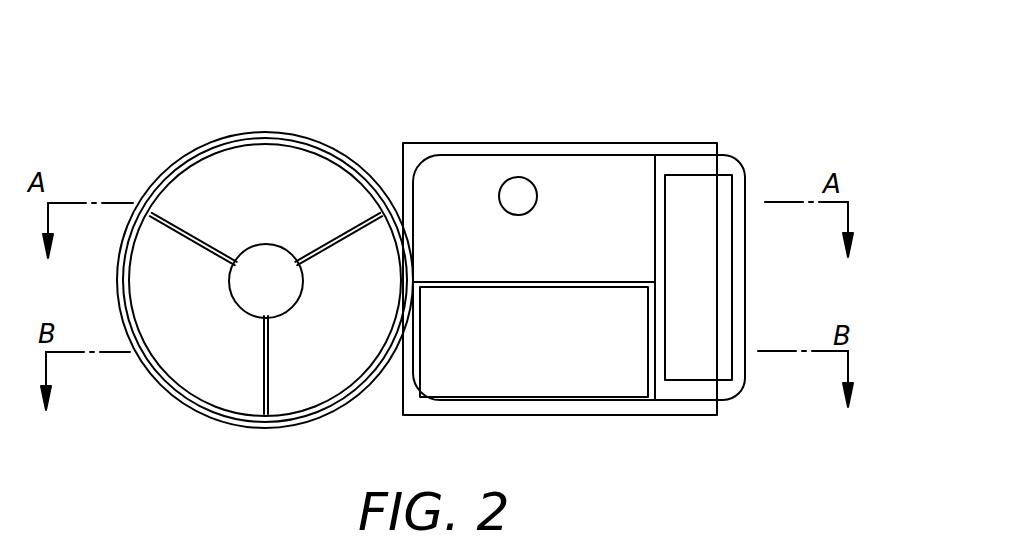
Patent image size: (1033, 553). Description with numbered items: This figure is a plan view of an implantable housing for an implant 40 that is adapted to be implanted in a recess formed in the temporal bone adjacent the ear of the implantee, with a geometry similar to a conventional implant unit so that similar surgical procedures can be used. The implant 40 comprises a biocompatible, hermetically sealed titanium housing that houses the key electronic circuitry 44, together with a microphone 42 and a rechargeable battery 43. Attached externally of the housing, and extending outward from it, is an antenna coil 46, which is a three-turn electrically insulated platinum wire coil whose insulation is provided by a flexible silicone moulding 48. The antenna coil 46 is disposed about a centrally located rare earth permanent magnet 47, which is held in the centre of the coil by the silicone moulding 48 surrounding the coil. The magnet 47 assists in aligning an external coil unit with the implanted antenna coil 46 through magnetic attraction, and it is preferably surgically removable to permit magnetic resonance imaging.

The implant 40 is at (609, 240).
The microphone 42 is at (518, 187).
The rechargeable battery 43 is at (500, 380).
The electronic circuitry 44 is at (712, 310).
The antenna coil 46 is at (256, 247).
The permanent magnet 47 is at (282, 295).
The silicone moulding 48 is at (203, 192).